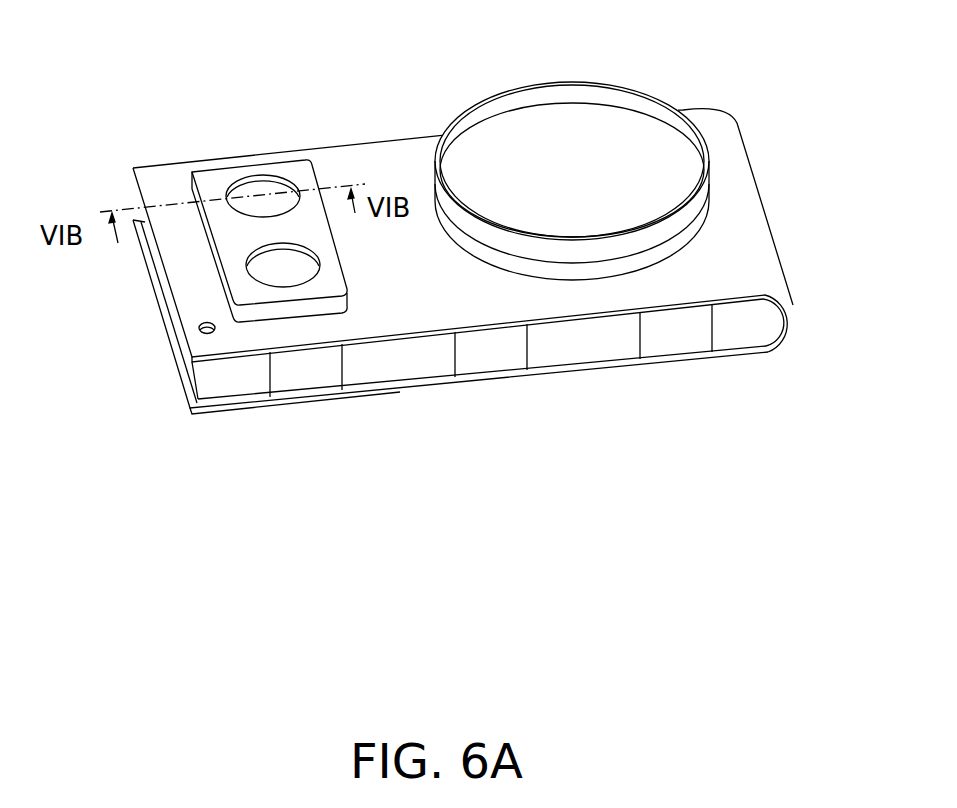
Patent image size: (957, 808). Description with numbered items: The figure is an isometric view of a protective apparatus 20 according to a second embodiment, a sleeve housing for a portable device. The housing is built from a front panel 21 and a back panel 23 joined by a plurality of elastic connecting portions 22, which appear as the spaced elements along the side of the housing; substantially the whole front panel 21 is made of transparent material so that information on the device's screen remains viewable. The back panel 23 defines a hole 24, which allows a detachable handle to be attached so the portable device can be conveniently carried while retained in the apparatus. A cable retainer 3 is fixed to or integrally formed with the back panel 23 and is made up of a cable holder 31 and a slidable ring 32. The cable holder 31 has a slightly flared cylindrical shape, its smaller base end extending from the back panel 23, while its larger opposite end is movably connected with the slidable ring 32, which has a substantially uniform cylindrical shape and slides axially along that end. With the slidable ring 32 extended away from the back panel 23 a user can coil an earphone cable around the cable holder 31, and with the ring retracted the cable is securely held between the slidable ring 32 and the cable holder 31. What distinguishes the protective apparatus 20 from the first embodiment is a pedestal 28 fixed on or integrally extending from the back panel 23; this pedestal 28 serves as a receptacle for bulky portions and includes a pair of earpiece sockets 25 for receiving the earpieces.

The protective apparatus 20 is at (365, 36).
The front panel 21 is at (223, 412).
The elastic connecting portions 22 is at (482, 358).
The back panel 23 is at (592, 313).
The hole 24 is at (198, 327).
The earpiece sockets 25 is at (262, 180).
The pedestal 28 is at (208, 178).
The cable retainer 3 is at (646, 181).
The cable holder 31 is at (677, 242).
The slidable ring 32 is at (693, 205).